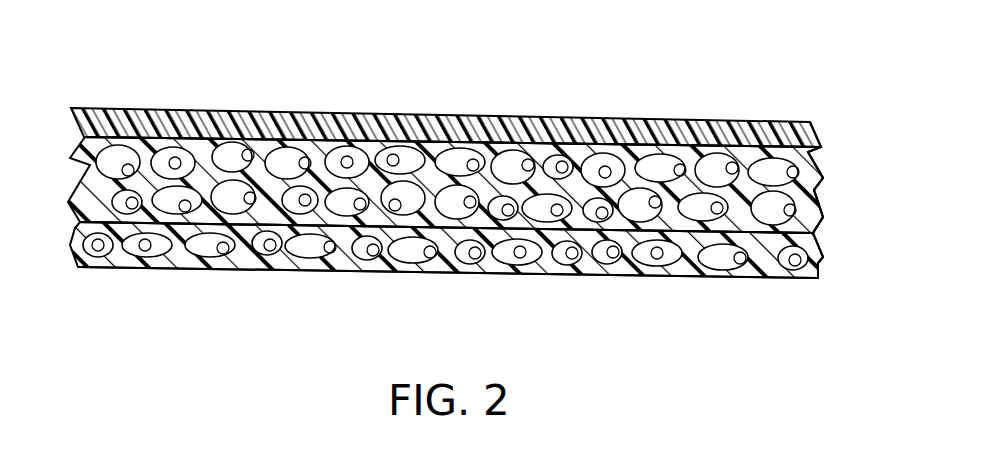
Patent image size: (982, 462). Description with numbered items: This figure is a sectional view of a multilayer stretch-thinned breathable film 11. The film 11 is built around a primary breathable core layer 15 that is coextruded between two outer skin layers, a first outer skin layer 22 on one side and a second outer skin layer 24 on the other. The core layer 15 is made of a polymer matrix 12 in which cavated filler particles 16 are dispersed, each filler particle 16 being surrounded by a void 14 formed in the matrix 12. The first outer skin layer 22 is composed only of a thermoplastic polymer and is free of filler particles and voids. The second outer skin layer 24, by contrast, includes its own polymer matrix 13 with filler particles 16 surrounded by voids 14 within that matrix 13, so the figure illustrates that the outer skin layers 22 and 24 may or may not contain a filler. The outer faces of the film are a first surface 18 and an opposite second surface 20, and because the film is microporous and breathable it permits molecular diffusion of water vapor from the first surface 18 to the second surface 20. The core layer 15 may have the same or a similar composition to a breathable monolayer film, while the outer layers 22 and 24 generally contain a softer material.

The multilayer stretch-thinned breathable film 11 is at (828, 250).
The polymer matrix 12 is at (680, 132).
The polymer matrix 13 is at (573, 277).
The voids 14 is at (589, 162).
The primary breathable core layer 15 is at (823, 197).
The filler particles 16 is at (607, 172).
The first surface 18 is at (178, 110).
The second surface 20 is at (258, 270).
The first outer skin layer 22 is at (743, 132).
The second outer skin layer 24 is at (692, 268).